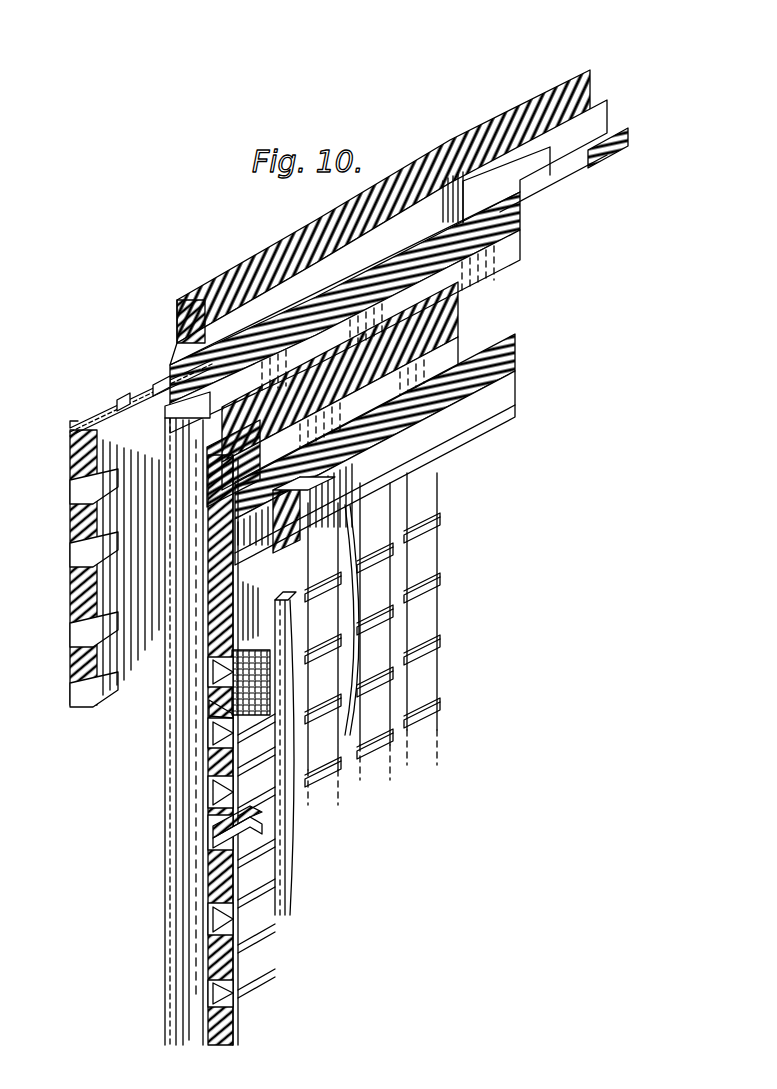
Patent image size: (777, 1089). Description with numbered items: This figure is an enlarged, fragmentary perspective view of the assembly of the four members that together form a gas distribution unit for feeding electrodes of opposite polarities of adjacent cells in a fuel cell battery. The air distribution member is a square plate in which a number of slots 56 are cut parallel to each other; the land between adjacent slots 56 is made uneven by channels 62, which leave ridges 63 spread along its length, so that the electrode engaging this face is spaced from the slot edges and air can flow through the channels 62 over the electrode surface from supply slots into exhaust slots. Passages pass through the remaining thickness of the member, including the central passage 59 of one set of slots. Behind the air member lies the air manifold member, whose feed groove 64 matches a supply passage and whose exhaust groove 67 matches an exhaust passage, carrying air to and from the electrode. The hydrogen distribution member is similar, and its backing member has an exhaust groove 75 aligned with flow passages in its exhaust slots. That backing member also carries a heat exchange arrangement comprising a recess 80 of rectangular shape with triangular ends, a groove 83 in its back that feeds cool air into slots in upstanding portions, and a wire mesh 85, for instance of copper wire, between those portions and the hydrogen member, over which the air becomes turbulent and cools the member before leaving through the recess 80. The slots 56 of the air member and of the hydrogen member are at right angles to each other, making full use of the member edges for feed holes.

The slots 56 is at (80, 490).
The central passage 59 is at (112, 545).
The channels 62 is at (92, 426).
The ridges 63 is at (162, 378).
The feed groove 64 is at (572, 190).
The exhaust groove 67 is at (183, 418).
The exhaust groove 75 is at (268, 500).
The recess 80 is at (222, 798).
The groove 83 is at (232, 425).
The wire mesh 85 is at (218, 724).